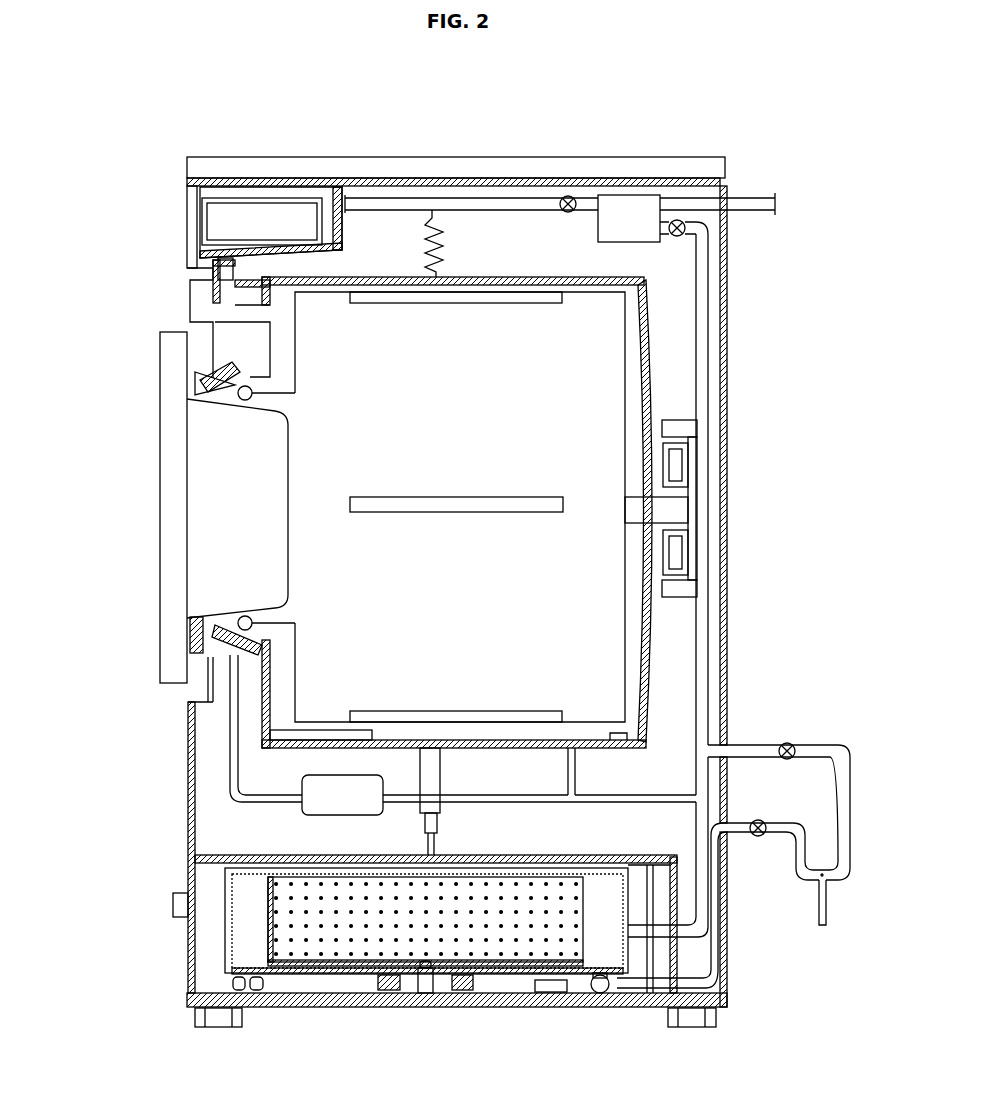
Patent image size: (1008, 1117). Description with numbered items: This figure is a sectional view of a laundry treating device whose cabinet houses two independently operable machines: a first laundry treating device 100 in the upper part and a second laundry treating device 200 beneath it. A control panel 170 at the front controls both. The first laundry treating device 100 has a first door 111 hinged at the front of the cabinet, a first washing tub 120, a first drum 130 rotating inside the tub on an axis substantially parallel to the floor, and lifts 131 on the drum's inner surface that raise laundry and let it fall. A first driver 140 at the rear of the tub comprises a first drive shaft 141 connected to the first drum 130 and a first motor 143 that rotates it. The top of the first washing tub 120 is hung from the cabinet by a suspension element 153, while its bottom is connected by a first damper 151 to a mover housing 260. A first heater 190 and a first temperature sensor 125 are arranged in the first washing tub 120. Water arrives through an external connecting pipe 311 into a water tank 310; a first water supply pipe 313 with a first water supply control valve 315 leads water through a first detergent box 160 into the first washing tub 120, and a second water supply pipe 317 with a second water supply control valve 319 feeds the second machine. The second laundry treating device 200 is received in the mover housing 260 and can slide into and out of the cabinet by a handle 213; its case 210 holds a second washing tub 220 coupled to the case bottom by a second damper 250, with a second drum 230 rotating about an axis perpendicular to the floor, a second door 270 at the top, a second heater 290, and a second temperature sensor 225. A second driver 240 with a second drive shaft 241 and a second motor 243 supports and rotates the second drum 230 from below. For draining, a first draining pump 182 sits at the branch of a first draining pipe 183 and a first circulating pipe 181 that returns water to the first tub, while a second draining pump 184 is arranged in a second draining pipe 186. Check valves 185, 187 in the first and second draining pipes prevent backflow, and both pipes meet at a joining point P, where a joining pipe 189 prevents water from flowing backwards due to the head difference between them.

The first laundry treating device 100 is at (152, 540).
The first door 111 is at (180, 465).
The first washing tub 120 is at (215, 290).
The first temperature sensor 125 is at (614, 735).
The first drum 130 is at (300, 345).
The lifts 131 is at (453, 498).
The first driver 140 is at (822, 450).
The first drive shaft 141 is at (675, 490).
The first motor 143 is at (705, 502).
The first damper 151 is at (430, 770).
The suspension element 153 is at (425, 232).
The first detergent box 160 is at (283, 197).
The control panel 170 is at (197, 220).
The first circulating pipe 181 is at (232, 745).
The first draining pump 182 is at (312, 788).
The first draining pipe 183 is at (740, 740).
The second draining pump 184 is at (555, 992).
The check valve 185 is at (795, 742).
The second draining pipe 186 is at (712, 935).
The check valve 187 is at (758, 838).
The joining pipe 189 is at (828, 908).
The first heater 190 is at (318, 725).
The second laundry treating device 200 is at (184, 960).
The case 210 is at (226, 885).
The handle 213 is at (176, 904).
The second washing tub 220 is at (234, 930).
The second temperature sensor 225 is at (612, 990).
The second drum 230 is at (262, 990).
The second driver 240 is at (386, 990).
The second drive shaft 241 is at (425, 993).
The second motor 243 is at (460, 990).
The second damper 250 is at (205, 1028).
The mover housing 260 is at (680, 950).
The second door 270 is at (296, 865).
The second heater 290 is at (235, 982).
The water tank 310 is at (630, 205).
The external connecting pipe 311 is at (745, 200).
The first water supply pipe 313 is at (470, 200).
The first water supply control valve 315 is at (568, 196).
The second water supply pipe 317 is at (706, 270).
The second water supply control valve 319 is at (678, 218).
The joining point P is at (823, 878).